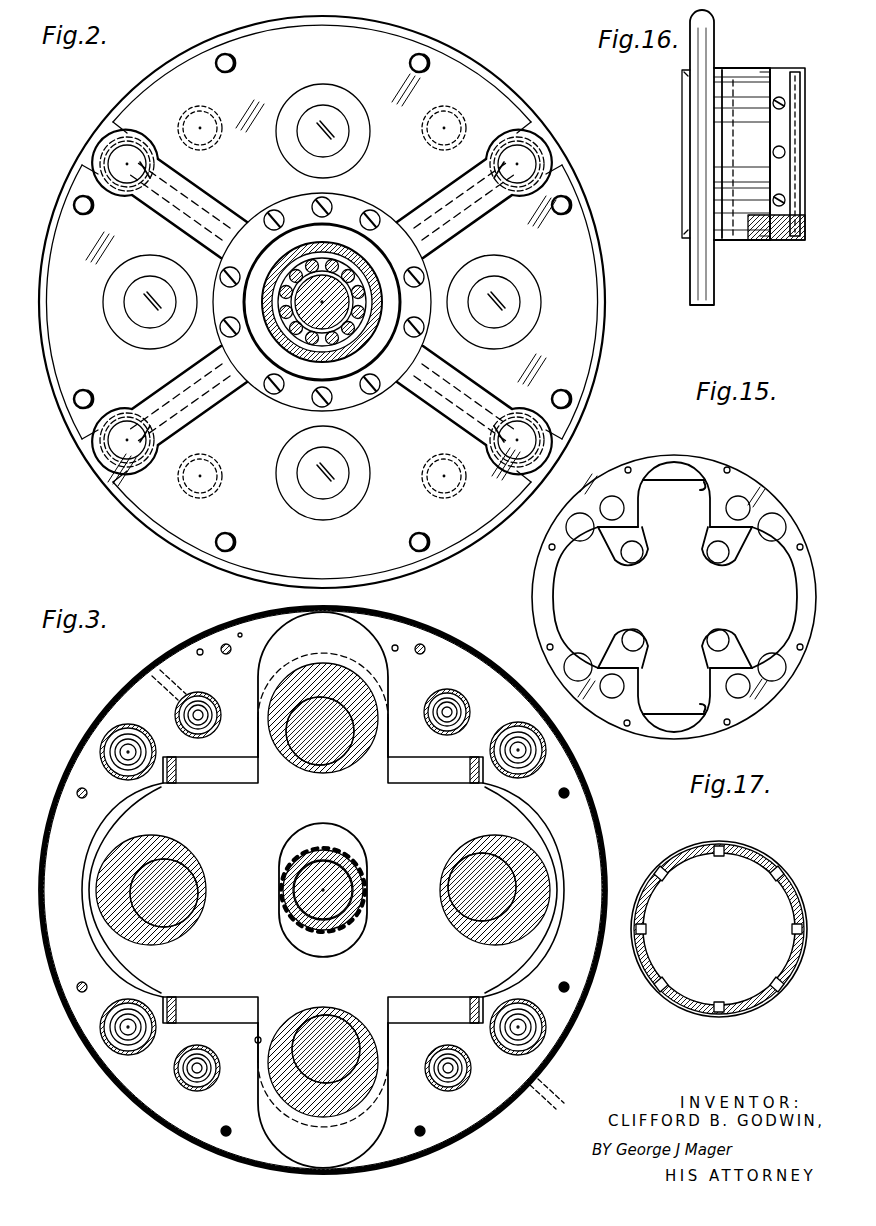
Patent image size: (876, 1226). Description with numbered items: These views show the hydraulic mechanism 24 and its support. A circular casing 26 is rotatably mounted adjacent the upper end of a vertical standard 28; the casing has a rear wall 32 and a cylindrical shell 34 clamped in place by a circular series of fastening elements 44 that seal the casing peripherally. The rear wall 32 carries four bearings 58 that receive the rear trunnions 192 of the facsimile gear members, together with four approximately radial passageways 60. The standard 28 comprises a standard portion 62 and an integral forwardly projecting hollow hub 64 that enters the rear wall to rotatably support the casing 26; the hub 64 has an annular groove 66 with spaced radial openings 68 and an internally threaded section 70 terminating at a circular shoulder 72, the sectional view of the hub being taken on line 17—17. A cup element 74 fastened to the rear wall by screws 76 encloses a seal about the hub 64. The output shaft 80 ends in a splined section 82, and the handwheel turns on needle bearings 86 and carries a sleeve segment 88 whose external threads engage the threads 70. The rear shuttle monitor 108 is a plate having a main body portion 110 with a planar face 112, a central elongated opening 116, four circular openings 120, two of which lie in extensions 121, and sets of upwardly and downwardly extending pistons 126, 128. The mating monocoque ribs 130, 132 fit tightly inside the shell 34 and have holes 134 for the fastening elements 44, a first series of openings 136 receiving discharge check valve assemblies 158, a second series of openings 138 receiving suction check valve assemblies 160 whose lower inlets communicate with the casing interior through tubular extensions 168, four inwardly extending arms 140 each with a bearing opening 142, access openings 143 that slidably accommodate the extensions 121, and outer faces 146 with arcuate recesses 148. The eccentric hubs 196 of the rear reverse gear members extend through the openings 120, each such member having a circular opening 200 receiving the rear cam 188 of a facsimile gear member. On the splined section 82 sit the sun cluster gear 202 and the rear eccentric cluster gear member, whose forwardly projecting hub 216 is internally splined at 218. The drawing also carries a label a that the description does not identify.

In FIG. 2, the mechanism 24 is at (480, 30).
In FIG. 3, the mechanism 24 is at (97, 710).
In FIG. 2, the circular casing 26 is at (598, 380).
In FIG. 3, the circular casing 26 is at (600, 792).
In FIG. 16, the vertical standard 28 is at (688, 285).
In FIG. 2, the rear wall 32 is at (95, 510).
In FIG. 3, the cylindrical shell 34 is at (462, 640).
In FIG. 2, the fastening elements 44 is at (218, 56).
In FIG. 3, the fastening elements 44 is at (226, 643).
In FIG. 2, the bearings 58 is at (371, 128).
In FIG. 2, the passageways 60 is at (205, 195).
In FIG. 16, the standard portion 62 is at (696, 262).
In FIG. 2, the hollow hub 64 is at (385, 240).
In FIG. 16, the hollow hub 64 is at (748, 163).
In FIG. 17, the hollow hub 64 is at (752, 852).
In FIG. 16, the annular groove 66 is at (806, 76).
In FIG. 17, the annular groove 66 is at (730, 846).
In FIG. 16, the radial openings 68 is at (774, 150).
In FIG. 17, the radial openings 68 is at (784, 872).
In FIG. 16, the threads 70 is at (712, 80).
In FIG. 16, the circular shoulder 72 is at (738, 100).
In FIG. 2, the cup element 74 is at (350, 222).
In FIG. 2, the screws 76 is at (318, 200).
In FIG. 2, the output shaft 80 is at (300, 312).
In FIG. 3, the splined section 82 is at (345, 882).
In FIG. 2, the needle bearings 86 is at (262, 298).
In FIG. 2, the sleeve segment 88 is at (310, 335).
In FIG. 3, the rear shuttle monitor 108 is at (595, 813).
In FIG. 3, the main body portion 110 is at (445, 775).
In FIG. 3, the planar face 112 is at (533, 962).
In FIG. 3, the elongated opening 116 is at (368, 870).
In FIG. 3, the circular openings 120 is at (360, 770).
In FIG. 3, the extensions 121 is at (385, 697).
In FIG. 3, the upwardly extending pistons 126 is at (185, 770).
In FIG. 3, the downwardly extending pistons 128 is at (180, 1012).
In FIG. 15, the front monocoque rib 130 is at (674, 572).
In FIG. 15, the rear monocoque rib 132 is at (783, 492).
In FIG. 3, the rear monocoque rib 132 is at (145, 680).
In FIG. 15, the holes 134 is at (628, 466).
In FIG. 3, the holes 134 is at (222, 650).
In FIG. 15, the first series of circular openings 136 is at (567, 527).
In FIG. 3, the first series of circular openings 136 is at (108, 740).
In FIG. 15, the second series of circular openings 138 is at (726, 508).
In FIG. 3, the second series of circular openings 138 is at (212, 708).
In FIG. 15, the inwardly extending arms 140 is at (612, 555).
In FIG. 3, the inwardly extending arms 140 is at (200, 784).
In FIG. 15, the bearing opening 142 is at (710, 556).
In FIG. 15, the access openings 143 is at (705, 490).
In FIG. 3, the access openings 143 is at (305, 655).
In FIG. 15, the outer faces 146 is at (556, 578).
In FIG. 3, the outer faces 146 is at (78, 980).
In FIG. 15, the arcuate recesses 148 is at (672, 465).
In FIG. 3, the arcuate recesses 148 is at (295, 630).
In FIG. 2, the discharge check valve assembly 158 is at (108, 140).
In FIG. 3, the discharge check valve assembly 158 is at (100, 750).
In FIG. 2, the suction check valve assembly 160 is at (222, 120).
In FIG. 3, the suction check valve assembly 160 is at (176, 708).
In FIG. 3, the tubular extensions 168 is at (150, 662).
In FIG. 3, the rear cam portion 188 is at (352, 728).
In FIG. 2, the rear trunnion 192 is at (330, 98).
In FIG. 3, the eccentric hub 196 is at (290, 740).
In FIG. 3, the circular opening 200 is at (320, 770).
In FIG. 3, the sun cluster gear 202 is at (300, 845).
In FIG. 3, the hub 216 is at (296, 920).
In FIG. 3, the internal splines 218 is at (290, 886).
In FIG. 16, the section line 17— 17 is at (800, 32).
In FIG. 2, the direction of rotation a is at (292, 6).
In FIG. 3, the direction of rotation a is at (37, 874).